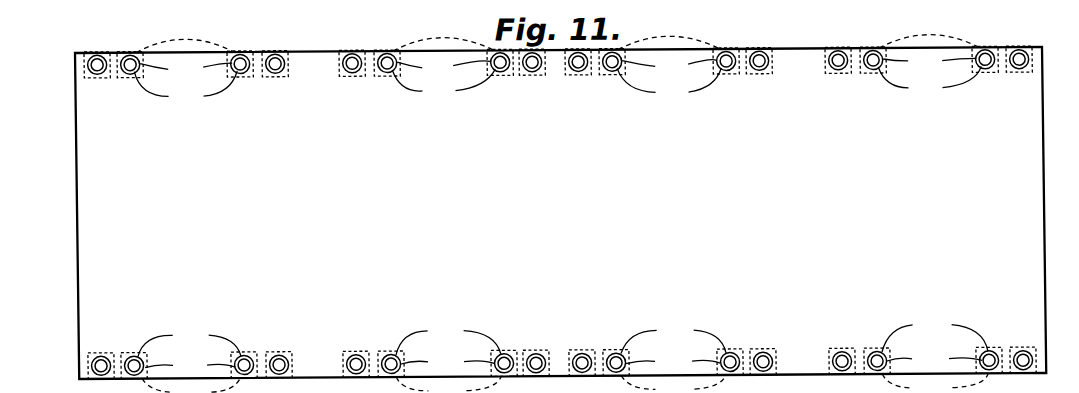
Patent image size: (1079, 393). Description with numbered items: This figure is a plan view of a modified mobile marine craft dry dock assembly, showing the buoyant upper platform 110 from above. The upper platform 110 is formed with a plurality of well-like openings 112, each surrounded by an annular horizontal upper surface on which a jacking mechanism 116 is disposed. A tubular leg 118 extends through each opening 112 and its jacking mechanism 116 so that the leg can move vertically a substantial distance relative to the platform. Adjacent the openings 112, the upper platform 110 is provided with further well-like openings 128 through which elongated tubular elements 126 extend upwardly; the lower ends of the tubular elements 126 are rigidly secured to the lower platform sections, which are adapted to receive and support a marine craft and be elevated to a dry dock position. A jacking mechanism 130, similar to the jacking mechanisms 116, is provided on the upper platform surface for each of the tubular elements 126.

The upper platform 110 is at (128, 203).
The well-like openings 112 is at (562, 207).
The jacking mechanism 116 is at (561, 211).
The tubular leg 118 is at (561, 214).
The elongated tubular elements 126 is at (90, 57).
The well-like openings 128 is at (86, 71).
The jacking mechanism 130 is at (96, 74).